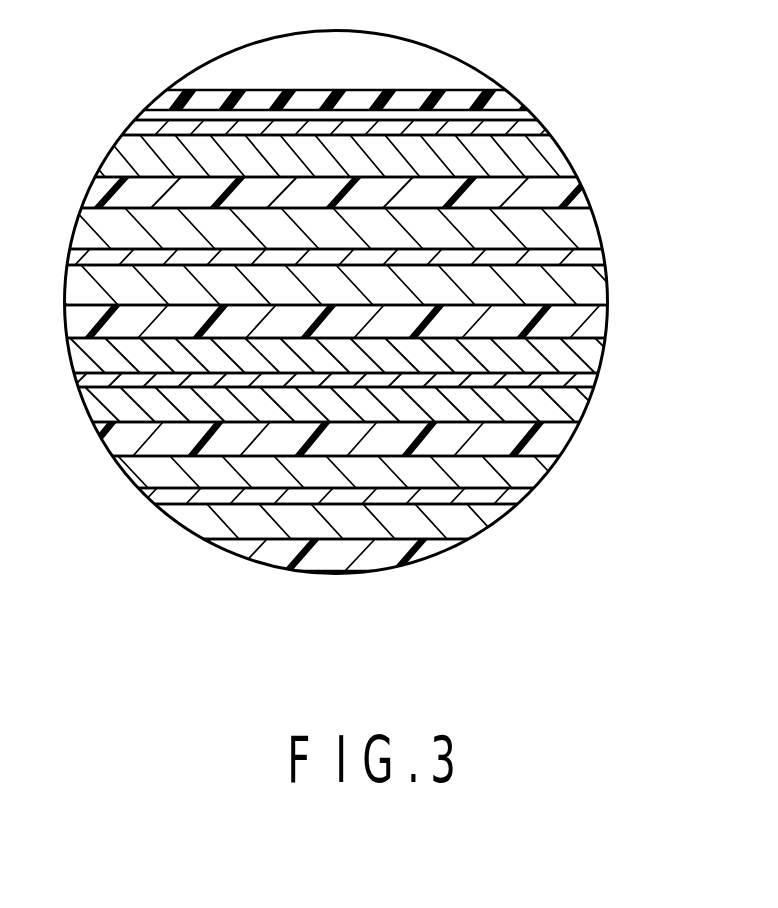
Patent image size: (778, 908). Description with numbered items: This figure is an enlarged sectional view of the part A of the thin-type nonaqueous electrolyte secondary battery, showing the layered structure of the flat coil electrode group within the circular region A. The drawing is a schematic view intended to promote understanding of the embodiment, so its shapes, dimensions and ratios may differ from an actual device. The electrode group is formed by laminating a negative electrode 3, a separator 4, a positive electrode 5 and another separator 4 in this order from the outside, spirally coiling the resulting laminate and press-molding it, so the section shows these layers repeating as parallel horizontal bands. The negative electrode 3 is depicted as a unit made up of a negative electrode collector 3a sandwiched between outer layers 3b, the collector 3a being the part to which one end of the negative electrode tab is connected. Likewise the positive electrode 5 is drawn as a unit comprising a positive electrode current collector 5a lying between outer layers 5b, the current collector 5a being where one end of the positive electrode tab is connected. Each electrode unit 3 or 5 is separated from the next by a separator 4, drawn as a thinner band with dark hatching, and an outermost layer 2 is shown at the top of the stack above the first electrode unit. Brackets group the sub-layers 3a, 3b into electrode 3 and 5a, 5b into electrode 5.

The part A is at (208, 77).
The first layer 2 is at (511, 92).
The negative electrode 3 is at (389, 261).
The negative electrode collector 3a is at (533, 127).
The outer layer of unit 3 3b is at (360, 295).
The separator 4 is at (100, 192).
The positive electrode 5 is at (379, 401).
The positive electrode current collector 5a is at (573, 255).
The outer layer of unit 5 5b is at (573, 215).